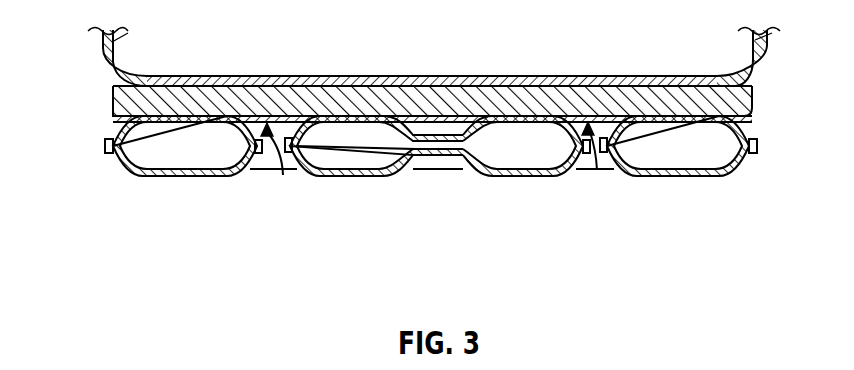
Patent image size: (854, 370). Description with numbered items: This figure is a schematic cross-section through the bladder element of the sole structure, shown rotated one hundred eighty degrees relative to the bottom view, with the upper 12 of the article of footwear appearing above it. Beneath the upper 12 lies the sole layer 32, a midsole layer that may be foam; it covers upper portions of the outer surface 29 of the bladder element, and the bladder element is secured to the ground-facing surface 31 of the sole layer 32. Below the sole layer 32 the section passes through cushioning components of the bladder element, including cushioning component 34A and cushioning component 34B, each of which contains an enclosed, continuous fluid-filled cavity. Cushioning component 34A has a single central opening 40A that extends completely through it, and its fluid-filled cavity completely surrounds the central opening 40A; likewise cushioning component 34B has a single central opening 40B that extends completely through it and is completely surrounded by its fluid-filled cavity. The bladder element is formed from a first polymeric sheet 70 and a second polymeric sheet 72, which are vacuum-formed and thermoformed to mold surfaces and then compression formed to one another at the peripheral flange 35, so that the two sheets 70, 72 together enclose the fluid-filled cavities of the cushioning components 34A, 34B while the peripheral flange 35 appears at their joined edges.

The upper 12 is at (117, 42).
The outer surface 29 is at (212, 104).
The sole layer 32 is at (299, 94).
The first polymeric sheet 70 is at (384, 120).
The peripheral flange 35 is at (108, 139).
The cushioning component 34A is at (110, 157).
The cushioning component 34B is at (522, 177).
The second polymeric sheet 72 is at (155, 178).
The ground-facing surface 31 is at (292, 165).
The central opening 40A is at (278, 163).
The central opening 40B is at (582, 174).